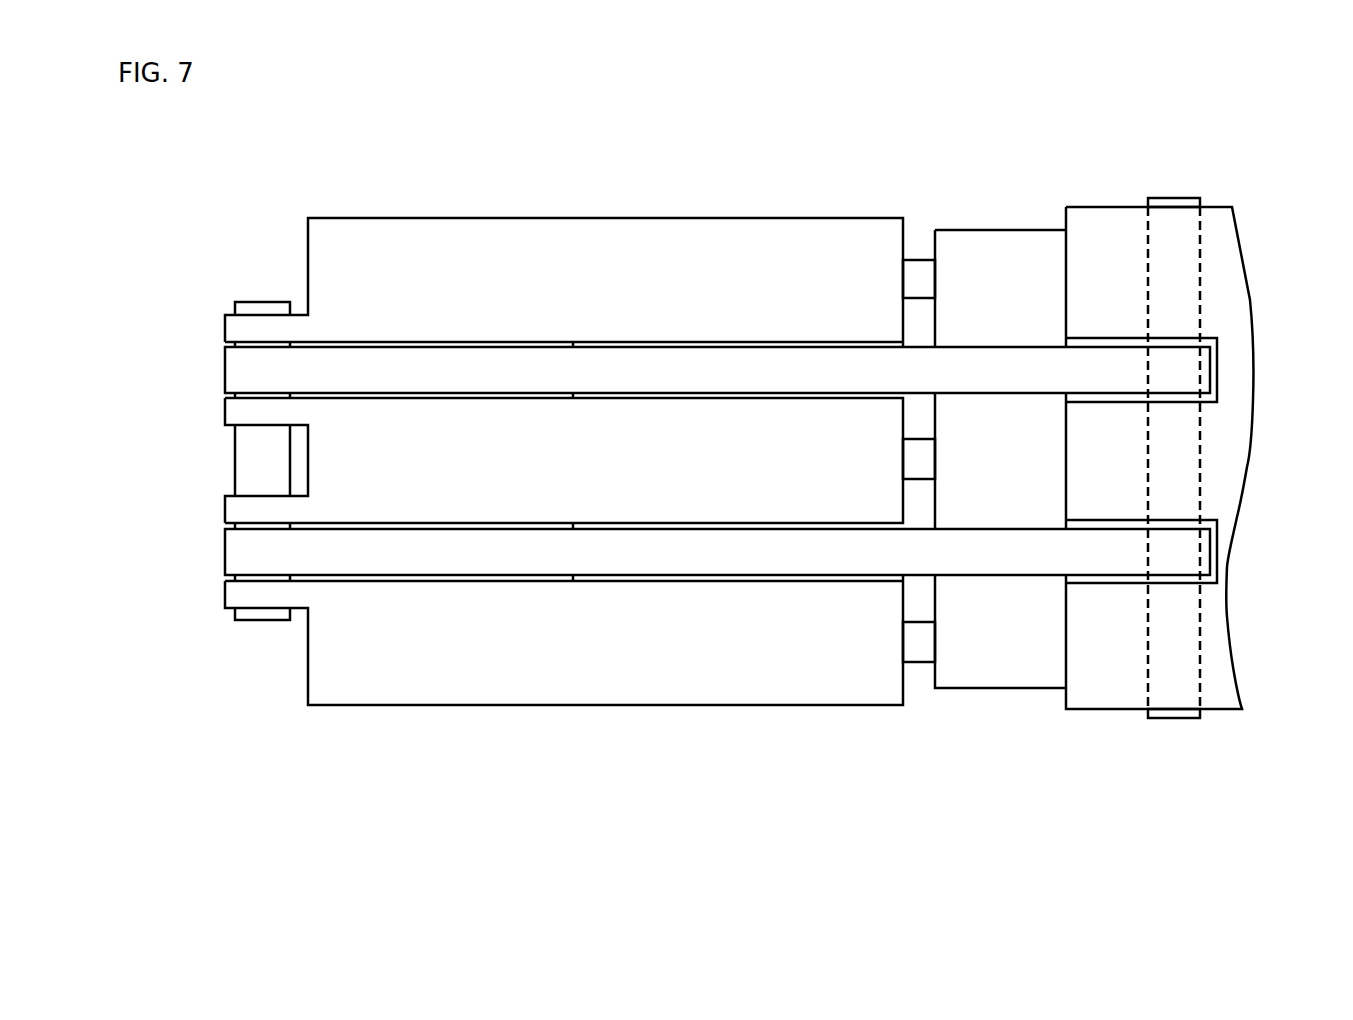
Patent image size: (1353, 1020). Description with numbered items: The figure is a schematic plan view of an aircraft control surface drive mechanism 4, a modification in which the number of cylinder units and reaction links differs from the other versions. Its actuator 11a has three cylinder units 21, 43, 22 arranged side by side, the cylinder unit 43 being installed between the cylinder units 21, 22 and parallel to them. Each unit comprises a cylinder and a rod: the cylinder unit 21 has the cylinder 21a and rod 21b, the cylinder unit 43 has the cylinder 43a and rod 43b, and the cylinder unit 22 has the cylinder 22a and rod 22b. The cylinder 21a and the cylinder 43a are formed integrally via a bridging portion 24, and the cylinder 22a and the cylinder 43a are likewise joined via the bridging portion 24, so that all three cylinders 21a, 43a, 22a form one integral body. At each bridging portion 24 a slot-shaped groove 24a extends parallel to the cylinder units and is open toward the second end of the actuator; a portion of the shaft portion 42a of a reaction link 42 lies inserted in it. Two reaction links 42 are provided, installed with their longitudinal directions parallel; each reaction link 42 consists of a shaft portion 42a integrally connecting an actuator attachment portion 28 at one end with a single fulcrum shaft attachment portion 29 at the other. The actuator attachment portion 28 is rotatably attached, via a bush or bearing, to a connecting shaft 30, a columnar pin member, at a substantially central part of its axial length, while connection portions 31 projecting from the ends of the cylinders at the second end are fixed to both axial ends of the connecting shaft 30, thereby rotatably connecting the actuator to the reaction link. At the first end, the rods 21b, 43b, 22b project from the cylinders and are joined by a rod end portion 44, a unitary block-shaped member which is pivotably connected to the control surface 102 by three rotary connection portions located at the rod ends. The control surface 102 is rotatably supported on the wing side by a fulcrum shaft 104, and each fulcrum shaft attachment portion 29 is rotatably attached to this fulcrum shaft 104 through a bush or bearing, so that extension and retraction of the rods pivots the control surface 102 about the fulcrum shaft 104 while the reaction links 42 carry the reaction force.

The control surface drive mechanism 4 is at (311, 176).
The actuator 11a is at (513, 189).
The cylinder unit 21 is at (580, 710).
The cylinder 21a is at (413, 663).
The rod 21b is at (916, 647).
The cylinder unit 22 is at (580, 227).
The cylinder 22a is at (378, 240).
The rod 22b is at (913, 273).
The bridging portion 24 is at (790, 345).
The groove 24a is at (403, 347).
The actuator attachment portion 28 is at (240, 370).
The fulcrum shaft attachment portion 29 is at (1205, 372).
The connecting shaft 30 is at (257, 308).
The connection portion 31 is at (240, 330).
The reaction link 42 is at (663, 323).
The shaft portion 42a is at (610, 365).
The cylinder unit 43 is at (580, 613).
The cylinder 43a is at (407, 490).
The rod 43b is at (915, 459).
The rod end portion 44 is at (988, 243).
The control surface 102 is at (1103, 677).
The fulcrum shaft 104 is at (1175, 202).